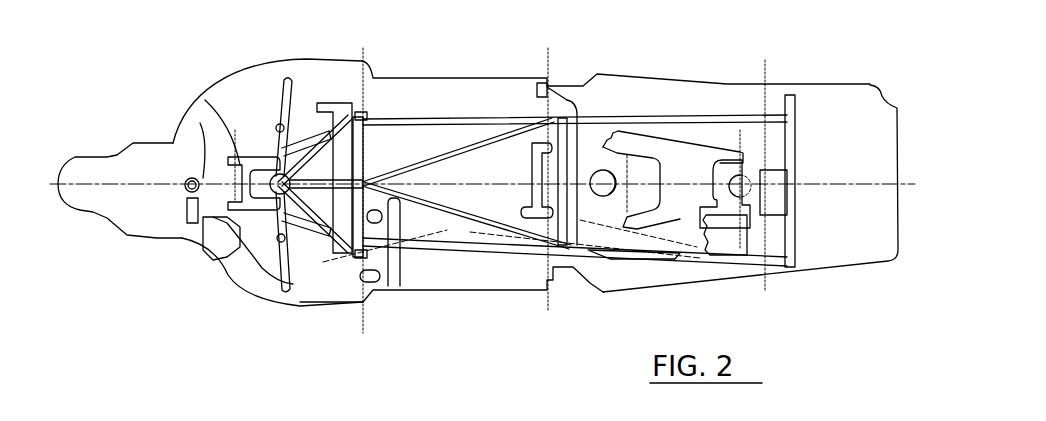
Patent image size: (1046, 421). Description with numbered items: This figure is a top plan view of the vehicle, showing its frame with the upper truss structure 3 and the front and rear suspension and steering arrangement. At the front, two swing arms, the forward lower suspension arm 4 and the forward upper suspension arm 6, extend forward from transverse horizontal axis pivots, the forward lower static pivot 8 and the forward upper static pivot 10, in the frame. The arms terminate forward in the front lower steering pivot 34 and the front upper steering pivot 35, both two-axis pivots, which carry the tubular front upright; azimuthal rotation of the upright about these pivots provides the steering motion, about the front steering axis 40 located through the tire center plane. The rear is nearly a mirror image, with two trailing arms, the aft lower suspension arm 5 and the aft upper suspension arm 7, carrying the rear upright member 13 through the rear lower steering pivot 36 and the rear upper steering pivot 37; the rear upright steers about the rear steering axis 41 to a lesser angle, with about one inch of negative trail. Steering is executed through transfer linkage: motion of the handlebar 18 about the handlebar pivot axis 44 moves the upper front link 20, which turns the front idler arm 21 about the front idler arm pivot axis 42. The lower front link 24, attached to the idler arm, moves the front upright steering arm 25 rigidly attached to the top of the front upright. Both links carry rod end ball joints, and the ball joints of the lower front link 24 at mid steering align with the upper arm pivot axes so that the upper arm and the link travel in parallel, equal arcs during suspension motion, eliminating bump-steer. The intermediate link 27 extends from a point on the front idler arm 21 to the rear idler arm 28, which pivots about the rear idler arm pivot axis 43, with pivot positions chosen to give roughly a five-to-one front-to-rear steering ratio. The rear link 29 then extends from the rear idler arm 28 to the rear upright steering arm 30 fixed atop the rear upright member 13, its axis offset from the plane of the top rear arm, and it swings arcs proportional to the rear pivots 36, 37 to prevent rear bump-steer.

The upper truss structure 3 is at (472, 117).
The forward lower suspension arm 4 is at (247, 290).
The aft lower suspension arm 5 is at (633, 253).
The forward upper suspension arm 6 is at (247, 147).
The aft upper suspension arm 7 is at (653, 140).
The forward lower static pivot 8 is at (362, 57).
The forward upper static pivot 10 is at (363, 323).
The rear upright member 13 is at (767, 172).
The handlebar 18 is at (283, 88).
The upper front link 20 is at (322, 253).
The front idler arm 21 is at (400, 282).
The lower front link 24 is at (303, 267).
The front upright steering arm 25 is at (207, 277).
The intermediate link 27 is at (442, 230).
The rear idler arm 28 is at (530, 237).
The rear link 29 is at (683, 252).
The rear upright steering arm 30 is at (748, 243).
The front lower steering pivot 34 is at (173, 142).
The front upper steering pivot 35 is at (238, 186).
The rear lower steering pivot 36 is at (770, 170).
The rear upper steering pivot 37 is at (740, 184).
The front steering axis 40 is at (173, 228).
The rear steering axis 41 is at (787, 193).
The front idler arm pivot axis 42 is at (420, 198).
The rear idler arm pivot axis 43 is at (548, 160).
The handlebar pivot axis 44 is at (288, 120).